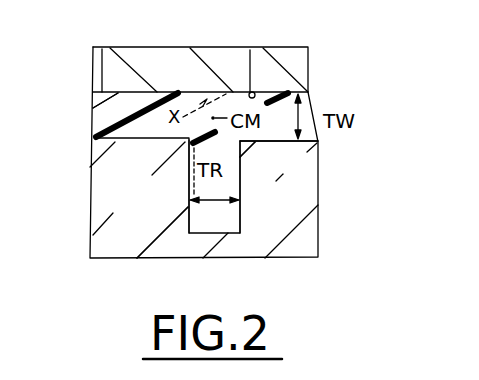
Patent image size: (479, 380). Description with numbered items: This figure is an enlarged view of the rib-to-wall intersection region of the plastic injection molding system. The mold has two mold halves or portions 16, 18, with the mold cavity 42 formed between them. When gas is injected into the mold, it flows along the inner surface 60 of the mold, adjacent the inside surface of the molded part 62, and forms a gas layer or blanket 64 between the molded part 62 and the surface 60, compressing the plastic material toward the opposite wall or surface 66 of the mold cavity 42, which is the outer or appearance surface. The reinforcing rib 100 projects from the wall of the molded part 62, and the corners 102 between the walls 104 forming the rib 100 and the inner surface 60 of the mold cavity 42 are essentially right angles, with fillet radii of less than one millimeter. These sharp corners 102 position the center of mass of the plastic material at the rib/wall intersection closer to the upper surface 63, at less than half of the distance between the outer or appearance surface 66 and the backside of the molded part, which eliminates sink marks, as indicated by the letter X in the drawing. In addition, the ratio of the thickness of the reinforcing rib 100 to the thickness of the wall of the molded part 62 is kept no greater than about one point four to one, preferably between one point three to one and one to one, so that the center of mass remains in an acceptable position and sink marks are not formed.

The mold half 16 is at (310, 52).
The mold half 18 is at (318, 225).
The mold cavity 42 is at (195, 70).
The inner surface of the mold 60 is at (206, 185).
The molded part 62 is at (115, 106).
The upper surface 63 is at (250, 50).
The gas layer 64 is at (95, 138).
The outer or appearance surface 66 is at (98, 49).
The reinforcing rib 100 is at (187, 185).
The corners 102 is at (293, 111).
The walls 104 is at (241, 221).